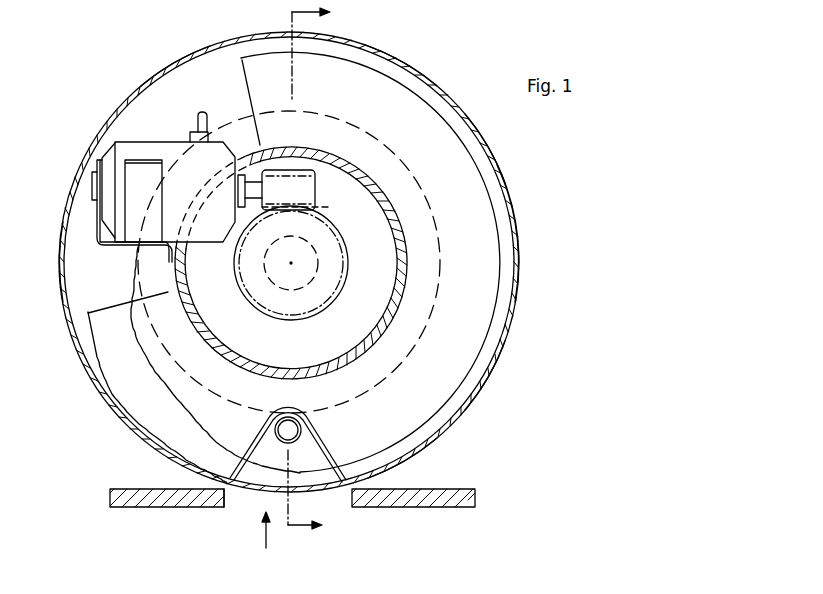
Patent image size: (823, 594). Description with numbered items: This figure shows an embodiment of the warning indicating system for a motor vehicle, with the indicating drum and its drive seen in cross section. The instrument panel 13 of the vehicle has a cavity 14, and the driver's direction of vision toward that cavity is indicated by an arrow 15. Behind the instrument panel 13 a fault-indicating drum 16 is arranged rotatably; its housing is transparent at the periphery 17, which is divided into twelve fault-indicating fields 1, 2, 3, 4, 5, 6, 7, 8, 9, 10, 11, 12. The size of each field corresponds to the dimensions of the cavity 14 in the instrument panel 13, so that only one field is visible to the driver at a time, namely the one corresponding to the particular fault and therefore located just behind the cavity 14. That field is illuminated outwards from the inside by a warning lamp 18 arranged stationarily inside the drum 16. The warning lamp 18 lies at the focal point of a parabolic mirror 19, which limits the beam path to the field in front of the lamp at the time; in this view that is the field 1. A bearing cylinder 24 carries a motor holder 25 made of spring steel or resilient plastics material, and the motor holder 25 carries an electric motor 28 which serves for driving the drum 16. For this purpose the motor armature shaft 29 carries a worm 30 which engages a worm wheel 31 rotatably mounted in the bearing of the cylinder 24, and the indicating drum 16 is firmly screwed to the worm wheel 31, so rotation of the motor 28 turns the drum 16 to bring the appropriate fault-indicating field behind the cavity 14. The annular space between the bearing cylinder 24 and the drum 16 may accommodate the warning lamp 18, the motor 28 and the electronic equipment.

The fault-indicating field 1 is at (308, 495).
The fault-indicating field 2 is at (402, 463).
The fault-indicating field 3 is at (485, 375).
The fault-indicating field 4 is at (524, 262).
The fault-indicating field 5 is at (485, 148).
The fault-indicating field 6 is at (402, 66).
The fault-indicating field 7 is at (294, 76).
The fault-indicating field 8 is at (175, 66).
The fault-indicating field 9 is at (126, 197).
The fault-indicating field 10 is at (53, 262).
The fault-indicating field 11 is at (187, 365).
The fault-indicating field 12 is at (167, 485).
The instrument panel 13 is at (433, 503).
The cavity 14 is at (237, 497).
The arrow 15 is at (266, 548).
The fault-indicating drum 16 is at (452, 96).
The periphery 17 is at (508, 194).
The warning lamp 18 is at (302, 431).
The parabolic mirror 19 is at (252, 445).
The bearing cylinder 24 is at (395, 222).
The motor holder 25 is at (137, 170).
The electric motor 28 is at (168, 155).
The motor armature shaft 29 is at (252, 185).
The worm 30 is at (318, 180).
The worm wheel 31 is at (348, 248).